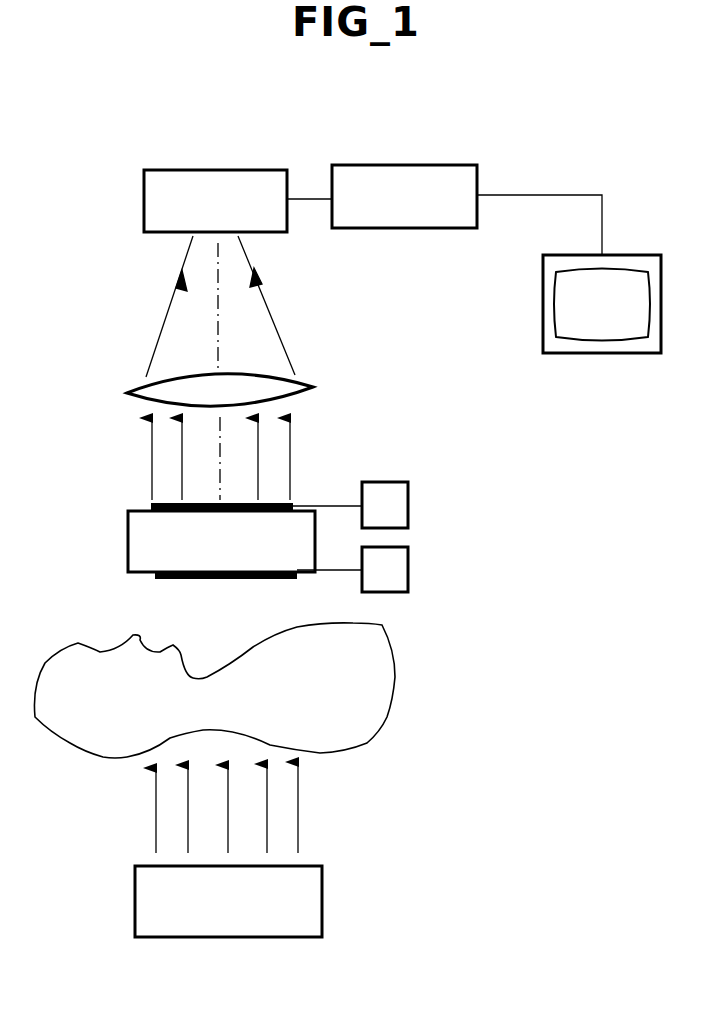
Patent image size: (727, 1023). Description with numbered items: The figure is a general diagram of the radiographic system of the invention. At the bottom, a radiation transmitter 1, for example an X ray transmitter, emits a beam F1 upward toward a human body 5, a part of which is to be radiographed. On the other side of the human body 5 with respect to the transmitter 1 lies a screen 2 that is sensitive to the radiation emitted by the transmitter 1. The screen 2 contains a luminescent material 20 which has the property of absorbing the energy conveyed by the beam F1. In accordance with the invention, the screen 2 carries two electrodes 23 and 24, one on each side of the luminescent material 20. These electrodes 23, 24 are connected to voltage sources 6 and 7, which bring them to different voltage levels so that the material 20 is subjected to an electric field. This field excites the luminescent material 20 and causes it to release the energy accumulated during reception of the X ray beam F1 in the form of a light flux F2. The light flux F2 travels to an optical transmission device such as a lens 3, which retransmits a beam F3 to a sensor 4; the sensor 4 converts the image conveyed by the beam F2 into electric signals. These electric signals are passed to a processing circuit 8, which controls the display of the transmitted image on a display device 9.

The radiation transmitter 1 is at (135, 903).
The screen 2 is at (113, 500).
The luminescent material 20 is at (140, 519).
The electrode 23 is at (273, 579).
The electrode 24 is at (273, 504).
The lens 3 is at (287, 392).
The sensor 4 is at (227, 170).
The human body 5 is at (125, 735).
The voltage source 6 is at (408, 572).
The voltage source 7 is at (408, 502).
The processing circuit 8 is at (365, 165).
The display device 9 is at (616, 255).
The beam F1 is at (168, 817).
The light flux F2 is at (163, 442).
The beam F3 is at (182, 338).